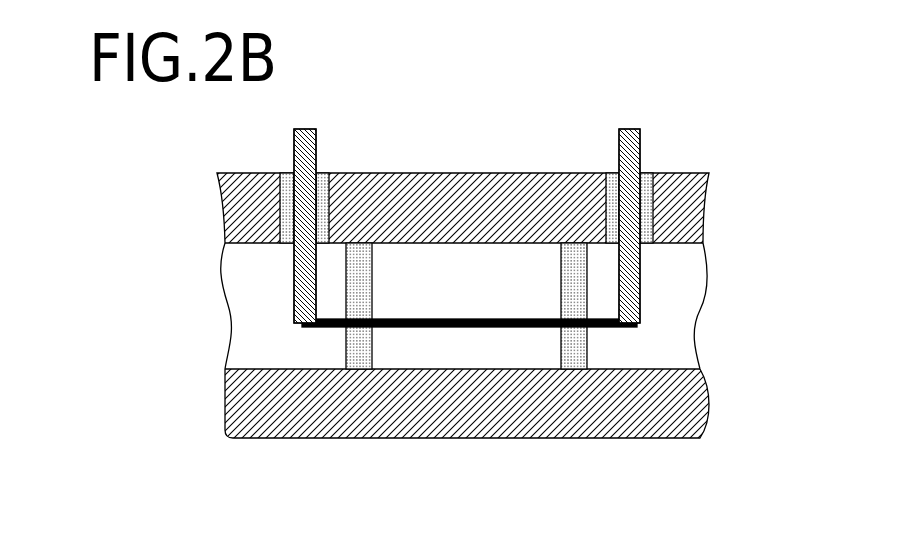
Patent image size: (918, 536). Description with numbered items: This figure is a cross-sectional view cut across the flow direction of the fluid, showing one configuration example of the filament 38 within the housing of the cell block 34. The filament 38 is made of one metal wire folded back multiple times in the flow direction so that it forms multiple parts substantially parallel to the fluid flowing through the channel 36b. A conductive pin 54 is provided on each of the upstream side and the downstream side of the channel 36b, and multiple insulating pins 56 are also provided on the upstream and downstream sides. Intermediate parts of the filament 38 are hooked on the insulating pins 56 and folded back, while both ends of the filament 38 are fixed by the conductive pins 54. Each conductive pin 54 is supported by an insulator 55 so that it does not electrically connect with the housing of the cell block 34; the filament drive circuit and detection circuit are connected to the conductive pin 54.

The cell block 34 is at (446, 200).
The channel 36b is at (474, 267).
The filament 38 is at (513, 328).
The conductive pin 54 is at (293, 265).
The insulator 55 is at (286, 192).
The insulating pin 56 is at (362, 347).